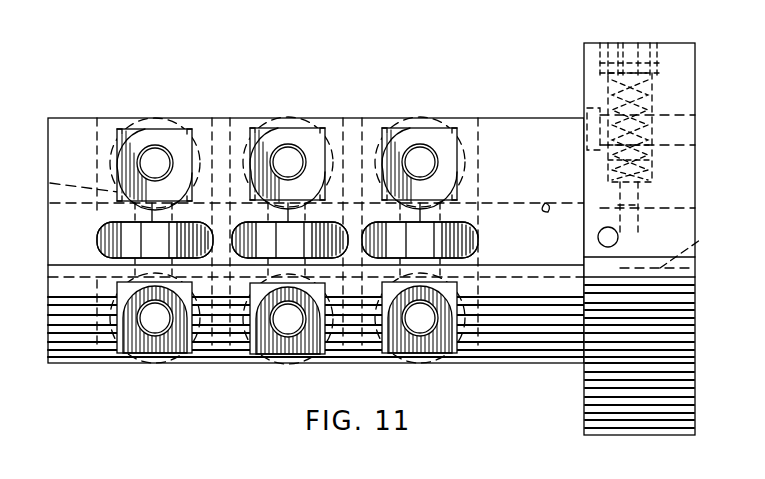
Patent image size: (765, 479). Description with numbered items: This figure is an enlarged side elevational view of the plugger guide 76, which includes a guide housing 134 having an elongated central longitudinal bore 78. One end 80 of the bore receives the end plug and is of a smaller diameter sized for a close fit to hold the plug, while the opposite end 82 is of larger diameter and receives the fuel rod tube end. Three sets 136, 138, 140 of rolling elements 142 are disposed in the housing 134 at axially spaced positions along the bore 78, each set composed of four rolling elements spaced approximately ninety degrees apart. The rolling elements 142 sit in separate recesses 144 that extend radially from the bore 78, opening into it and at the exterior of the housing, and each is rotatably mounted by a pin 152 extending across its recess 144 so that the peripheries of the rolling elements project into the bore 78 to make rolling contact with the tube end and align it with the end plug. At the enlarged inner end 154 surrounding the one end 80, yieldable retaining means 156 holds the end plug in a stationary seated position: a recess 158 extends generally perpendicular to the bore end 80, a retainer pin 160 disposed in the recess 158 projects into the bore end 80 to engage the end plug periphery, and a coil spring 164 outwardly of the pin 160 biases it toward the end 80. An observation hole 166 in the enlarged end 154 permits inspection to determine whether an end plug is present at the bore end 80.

The plugger guide 76 is at (440, 46).
The central longitudinal bore 78 is at (545, 203).
The one end 80 is at (60, 292).
The opposite end 82 is at (695, 248).
The guide housing 134 is at (522, 115).
The first set of rolling elements 136 is at (153, 112).
The second set of rolling elements 138 is at (290, 112).
The third set of rolling elements 140 is at (417, 112).
The rolling element 142 is at (172, 112).
The recess 144 is at (118, 190).
The pin 152 is at (155, 148).
The enlarged inner end 154 is at (666, 43).
The yieldable retaining means 156 is at (658, 97).
The recess 158 is at (652, 165).
The retainer pin 160 is at (640, 210).
The coil spring 164 is at (598, 92).
The observation hole 166 is at (598, 237).